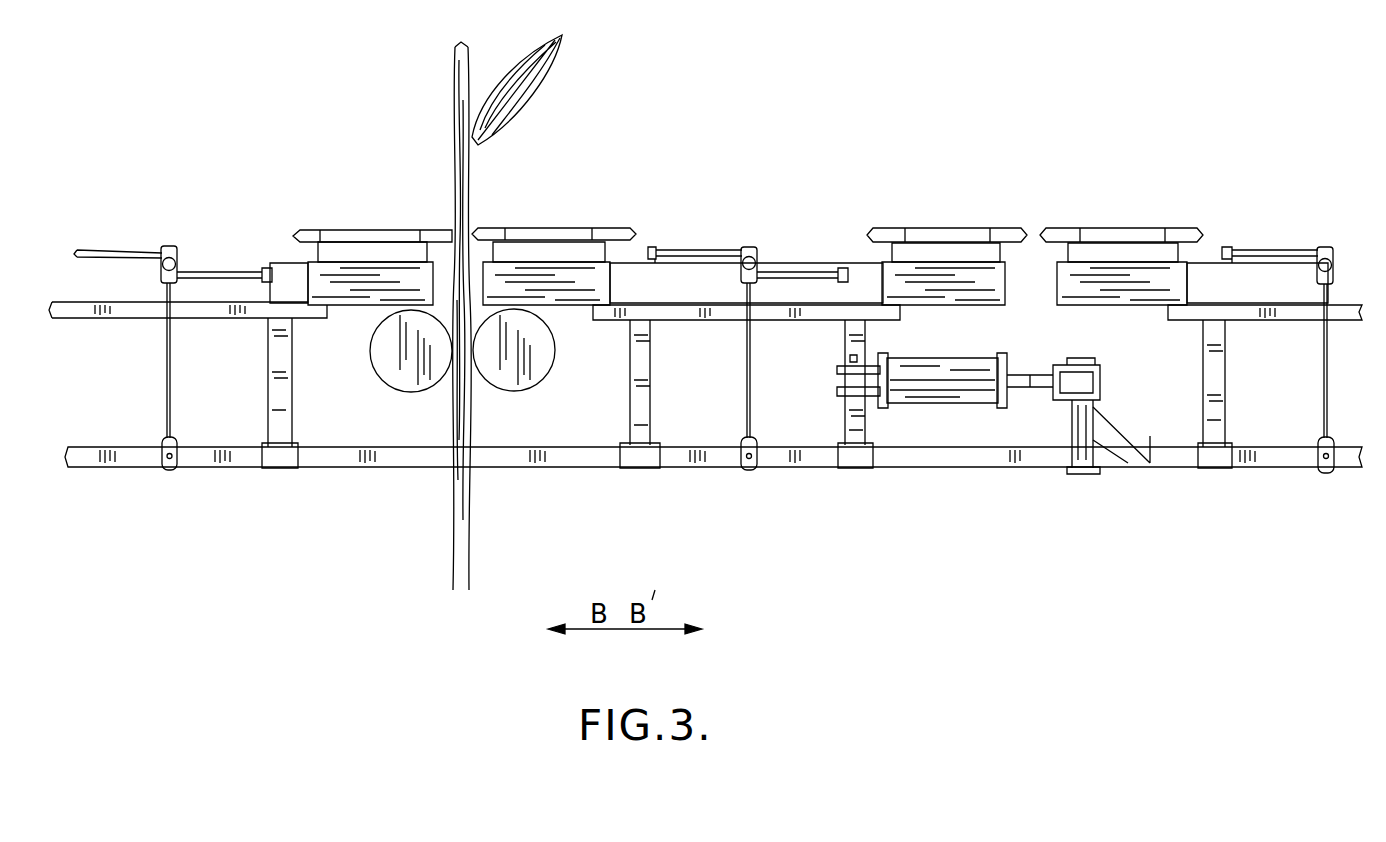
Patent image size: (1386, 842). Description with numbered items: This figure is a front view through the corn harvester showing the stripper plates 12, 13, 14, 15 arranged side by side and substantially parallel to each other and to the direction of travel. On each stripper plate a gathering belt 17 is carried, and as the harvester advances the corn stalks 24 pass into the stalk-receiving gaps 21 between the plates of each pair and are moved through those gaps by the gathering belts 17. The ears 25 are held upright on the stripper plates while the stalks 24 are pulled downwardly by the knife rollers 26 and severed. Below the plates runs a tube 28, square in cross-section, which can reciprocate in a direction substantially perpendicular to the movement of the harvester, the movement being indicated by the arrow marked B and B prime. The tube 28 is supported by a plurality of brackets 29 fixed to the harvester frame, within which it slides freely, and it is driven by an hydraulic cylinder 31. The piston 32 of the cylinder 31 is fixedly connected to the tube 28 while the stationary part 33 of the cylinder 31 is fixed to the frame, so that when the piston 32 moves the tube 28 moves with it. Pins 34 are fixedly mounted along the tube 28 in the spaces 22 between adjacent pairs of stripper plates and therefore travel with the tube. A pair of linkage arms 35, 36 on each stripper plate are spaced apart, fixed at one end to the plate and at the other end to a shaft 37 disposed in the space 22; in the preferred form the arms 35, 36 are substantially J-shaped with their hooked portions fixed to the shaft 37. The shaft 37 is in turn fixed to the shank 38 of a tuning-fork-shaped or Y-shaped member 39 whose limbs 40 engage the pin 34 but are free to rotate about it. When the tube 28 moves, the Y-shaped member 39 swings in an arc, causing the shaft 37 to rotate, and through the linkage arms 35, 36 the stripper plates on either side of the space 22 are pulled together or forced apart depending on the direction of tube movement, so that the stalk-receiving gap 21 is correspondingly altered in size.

The stripper plate 12 is at (353, 283).
The stripper plate 13 is at (573, 290).
The stripper plate 14 is at (932, 248).
The stripper plate 15 is at (1120, 258).
The gathering belt 17 is at (342, 235).
The stalk-receiving gap 21 is at (440, 262).
The space 22 is at (701, 280).
The corn stalk 24 is at (452, 135).
The ear 25 is at (505, 113).
The knife roller 26 is at (408, 363).
The tube 28 is at (133, 458).
The bracket 29 is at (843, 465).
The hydraulic cylinder 31 is at (987, 395).
The piston 32 is at (1022, 378).
The stationary part 33 is at (908, 405).
The pin 34 is at (172, 468).
The linkage arm 35 is at (668, 252).
The linkage arm 36 is at (808, 268).
The shaft 37 is at (748, 250).
The shank 38 is at (748, 365).
The Y-shaped member 39 is at (735, 395).
The limb 40 is at (740, 460).